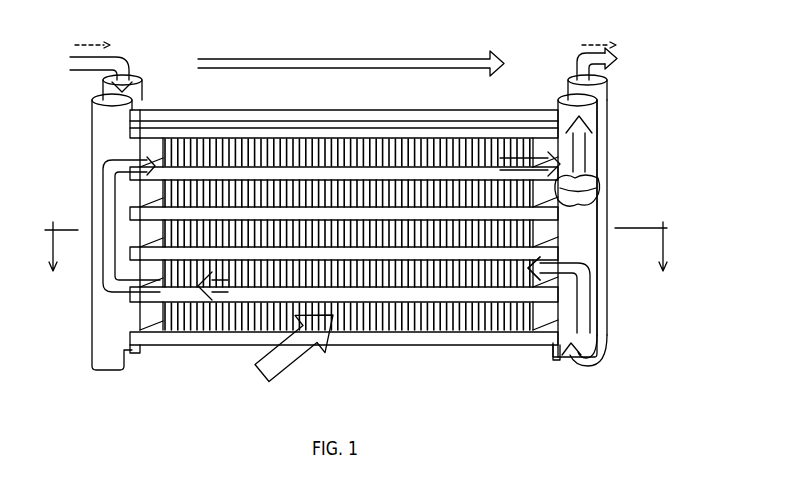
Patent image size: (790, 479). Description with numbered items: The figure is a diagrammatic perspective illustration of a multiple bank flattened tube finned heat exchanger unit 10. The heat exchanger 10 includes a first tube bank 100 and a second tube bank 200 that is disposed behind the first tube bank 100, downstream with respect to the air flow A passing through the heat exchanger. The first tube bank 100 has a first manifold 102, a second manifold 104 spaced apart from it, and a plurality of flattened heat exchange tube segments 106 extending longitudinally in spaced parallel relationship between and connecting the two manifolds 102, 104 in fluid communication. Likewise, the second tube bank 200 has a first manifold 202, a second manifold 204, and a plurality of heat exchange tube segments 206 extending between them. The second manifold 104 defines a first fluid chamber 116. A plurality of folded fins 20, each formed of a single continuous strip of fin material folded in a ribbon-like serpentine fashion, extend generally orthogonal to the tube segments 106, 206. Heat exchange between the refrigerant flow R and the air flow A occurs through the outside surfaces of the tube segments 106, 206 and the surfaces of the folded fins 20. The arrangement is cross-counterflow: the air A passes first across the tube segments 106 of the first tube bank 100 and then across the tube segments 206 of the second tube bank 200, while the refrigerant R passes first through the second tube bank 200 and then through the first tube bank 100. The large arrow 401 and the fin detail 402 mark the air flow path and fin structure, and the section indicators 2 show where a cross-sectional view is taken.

The multiple bank flattened tube finned heat exchanger unit 10 is at (247, 54).
The folded fin 20 is at (207, 333).
The first tube bank 100 is at (388, 252).
The first manifold 102 is at (122, 368).
The second manifold 104 is at (565, 360).
The heat exchange tube segments 106 is at (545, 251).
The first fluid chamber 116 is at (602, 263).
The second tube bank 200 is at (518, 102).
The first manifold 202 is at (143, 85).
The second manifold 204 is at (608, 98).
The heat exchange tube segments 206 is at (327, 117).
The air flow direction arrow 401 is at (376, 60).
The fins 402 is at (370, 275).
The section line 2- 2 is at (357, 251).
The refrigerant flow R is at (129, 50).
The air flow A is at (272, 383).